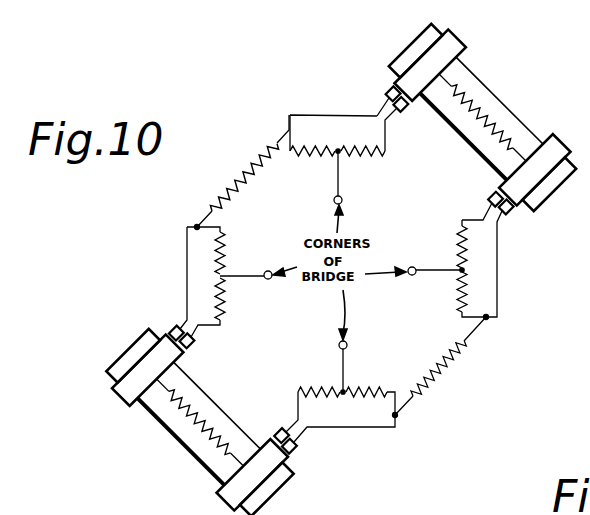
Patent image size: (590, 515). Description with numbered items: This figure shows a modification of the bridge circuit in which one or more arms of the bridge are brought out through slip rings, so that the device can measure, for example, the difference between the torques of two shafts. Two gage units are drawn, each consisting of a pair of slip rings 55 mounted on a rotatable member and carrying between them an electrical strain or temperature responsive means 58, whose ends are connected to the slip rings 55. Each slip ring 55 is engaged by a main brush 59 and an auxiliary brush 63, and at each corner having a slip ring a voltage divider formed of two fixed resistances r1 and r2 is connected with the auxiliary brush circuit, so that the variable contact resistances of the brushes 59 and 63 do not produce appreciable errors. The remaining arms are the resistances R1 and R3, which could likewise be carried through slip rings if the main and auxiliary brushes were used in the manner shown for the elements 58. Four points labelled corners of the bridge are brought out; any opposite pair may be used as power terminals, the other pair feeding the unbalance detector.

The slip ring 55 is at (456, 45).
The electrical strain or temperature responsive means 58 is at (484, 120).
The main brush 59 is at (387, 95).
The auxiliary brush 63 is at (399, 111).
The bridge arm resistance R1 is at (246, 176).
The bridge arm resistance R3 is at (441, 368).
The fixed resistance r1 is at (313, 153).
The fixed resistance r2 is at (361, 153).